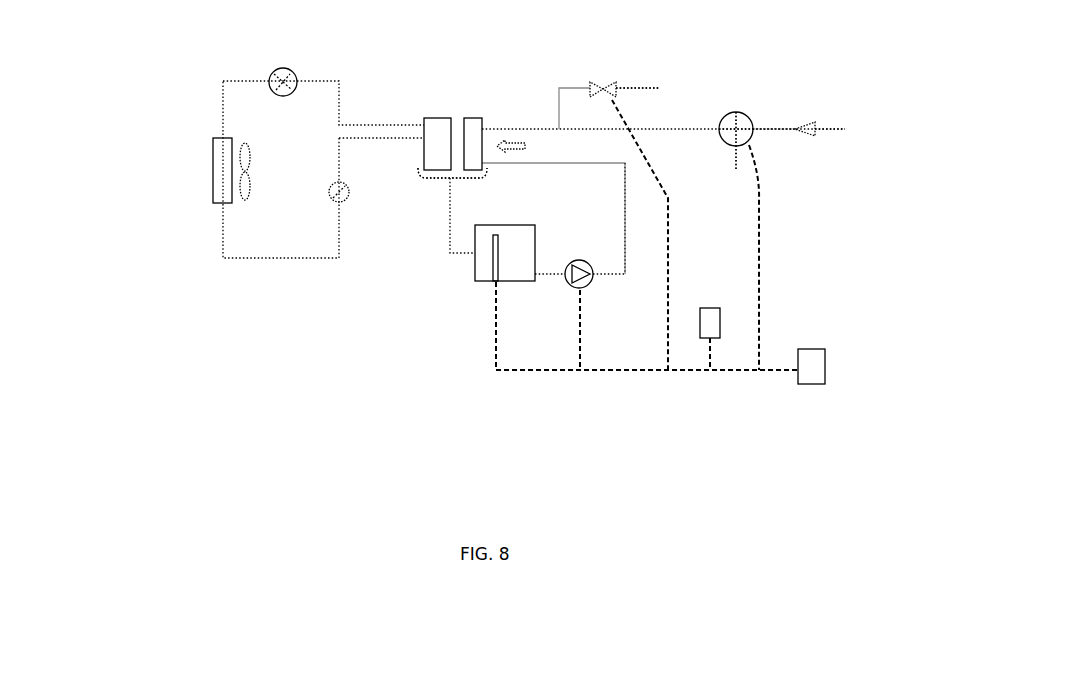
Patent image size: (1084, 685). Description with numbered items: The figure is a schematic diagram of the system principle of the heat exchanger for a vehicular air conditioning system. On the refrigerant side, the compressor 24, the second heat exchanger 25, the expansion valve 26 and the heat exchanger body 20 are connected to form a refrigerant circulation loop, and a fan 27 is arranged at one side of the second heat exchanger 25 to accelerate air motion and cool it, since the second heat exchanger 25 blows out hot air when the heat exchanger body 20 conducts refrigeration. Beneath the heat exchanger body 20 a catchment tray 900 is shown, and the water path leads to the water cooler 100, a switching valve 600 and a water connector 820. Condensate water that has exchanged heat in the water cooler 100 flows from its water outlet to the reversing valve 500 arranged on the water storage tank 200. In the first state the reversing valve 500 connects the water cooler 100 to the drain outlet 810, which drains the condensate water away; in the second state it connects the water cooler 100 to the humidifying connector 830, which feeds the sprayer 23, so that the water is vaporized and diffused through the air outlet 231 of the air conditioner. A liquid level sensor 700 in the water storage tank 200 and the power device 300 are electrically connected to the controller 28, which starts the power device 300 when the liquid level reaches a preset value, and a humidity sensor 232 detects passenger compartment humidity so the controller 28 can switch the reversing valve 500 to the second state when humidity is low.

The heat exchanger body 20 is at (434, 122).
The sprayer 23 is at (812, 118).
The compressor 24 is at (277, 76).
The second heat exchanger 25 is at (220, 176).
The expansion valve 26 is at (330, 195).
The fan 27 is at (245, 205).
The controller 28 is at (815, 360).
The water cooler 100 is at (477, 137).
The water storage tank 200 is at (518, 268).
The air outlet of air conditioner 231 is at (845, 128).
The humidity sensor 232 is at (712, 320).
The power device 300 is at (588, 280).
The reversing valve 500 is at (725, 117).
The switching valve 600 is at (610, 90).
The liquid level sensor 700 is at (495, 283).
The drain outlet 810 is at (737, 170).
The water connector 820 is at (643, 88).
The humidifying connector 830 is at (763, 128).
The catchment tray 900 is at (440, 177).